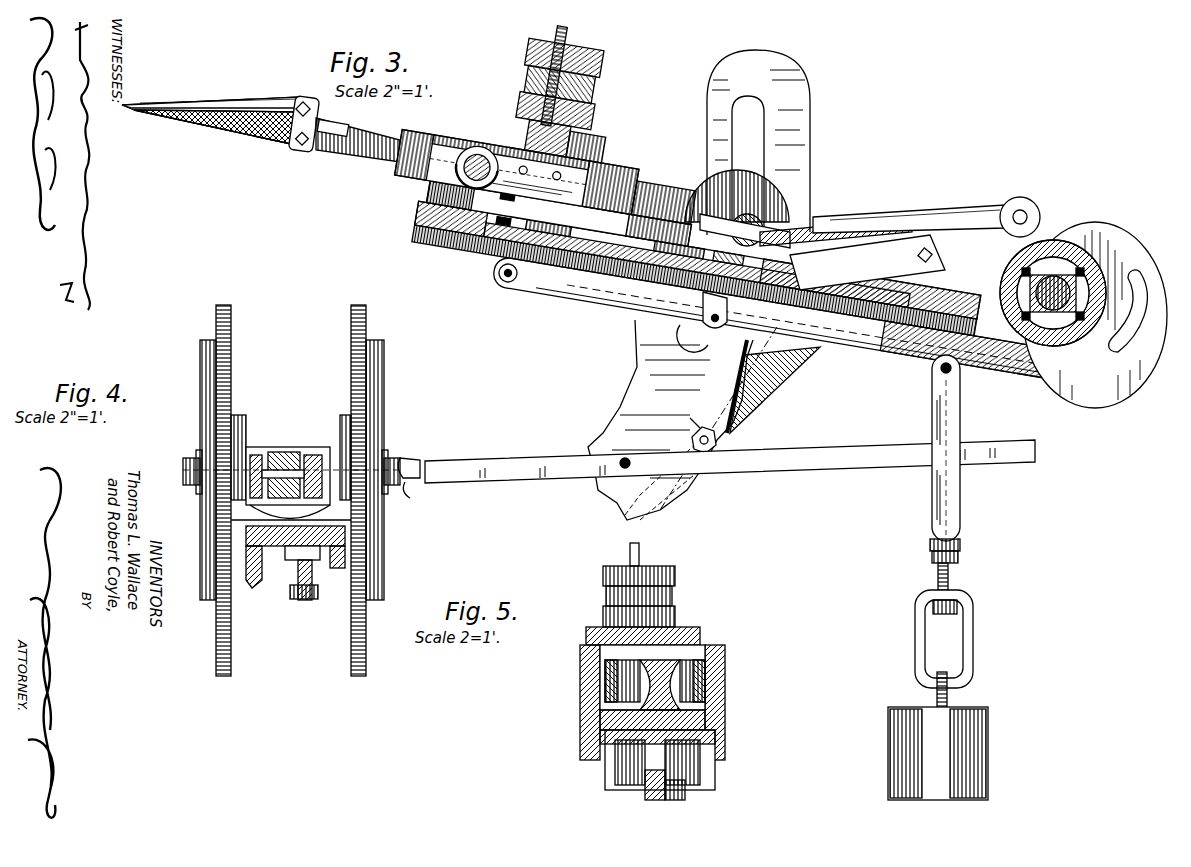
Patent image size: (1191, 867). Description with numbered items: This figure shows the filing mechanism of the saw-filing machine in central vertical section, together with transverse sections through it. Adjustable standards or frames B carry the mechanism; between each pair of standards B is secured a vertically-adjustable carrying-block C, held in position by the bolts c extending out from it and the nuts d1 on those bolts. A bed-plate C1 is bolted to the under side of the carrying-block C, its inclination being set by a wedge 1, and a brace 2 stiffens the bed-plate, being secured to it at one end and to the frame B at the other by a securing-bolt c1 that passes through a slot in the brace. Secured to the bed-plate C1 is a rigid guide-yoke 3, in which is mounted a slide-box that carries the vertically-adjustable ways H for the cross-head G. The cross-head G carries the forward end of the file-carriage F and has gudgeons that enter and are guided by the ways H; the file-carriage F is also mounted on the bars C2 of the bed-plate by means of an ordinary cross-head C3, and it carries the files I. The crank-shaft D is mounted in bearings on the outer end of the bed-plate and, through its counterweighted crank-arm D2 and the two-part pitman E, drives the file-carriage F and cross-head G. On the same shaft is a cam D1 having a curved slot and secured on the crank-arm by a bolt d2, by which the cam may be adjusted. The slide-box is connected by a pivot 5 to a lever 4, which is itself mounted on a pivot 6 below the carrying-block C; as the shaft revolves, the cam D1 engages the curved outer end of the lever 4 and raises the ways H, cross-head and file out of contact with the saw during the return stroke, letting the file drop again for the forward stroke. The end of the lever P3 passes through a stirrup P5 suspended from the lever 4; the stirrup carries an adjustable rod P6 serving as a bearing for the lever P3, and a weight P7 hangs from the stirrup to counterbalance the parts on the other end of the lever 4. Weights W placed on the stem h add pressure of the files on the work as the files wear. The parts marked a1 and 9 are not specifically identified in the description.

In FIG. 3, the files I is at (236, 128).
In FIG. 3, the adjustable ways H is at (396, 180).
In FIG. 5, the adjustable ways H is at (720, 630).
In FIG. 3, the cross-head G is at (440, 190).
In FIG. 5, the cross-head G is at (585, 645).
In FIG. 3, the file-carriage F is at (452, 142).
In FIG. 5, the file-carriage F is at (655, 672).
In FIG. 3, the guide-yoke 3 is at (505, 126).
In FIG. 5, the guide-yoke 3 is at (718, 700).
In FIG. 3, the weights W is at (596, 64).
In FIG. 5, the weights W is at (676, 572).
In FIG. 3, the stem h is at (572, 30).
In FIG. 5, the stem h is at (640, 547).
In FIG. 3, the adjustable standards B is at (706, 75).
In FIG. 4, the adjustable standards B is at (200, 413).
In FIG. 3, the carrying-block C is at (735, 190).
In FIG. 4, the carrying-block C is at (242, 437).
In FIG. 3, the bed-plate C1 is at (805, 283).
In FIG. 4, the bed-plate C1 is at (278, 585).
In FIG. 5, the bed-plate C1 is at (716, 760).
In FIG. 3, the bars C2 is at (890, 258).
In FIG. 3, the cross-head C3 is at (800, 218).
In FIG. 3, the pitman E is at (930, 222).
In FIG. 3, the crank-shaft D is at (1090, 240).
In FIG. 3, the cam D1 is at (1065, 250).
In FIG. 3, the crank-arm D2 is at (1035, 215).
In FIG. 3, the bolt d2 is at (1015, 262).
In FIG. 3, the lever 4 is at (590, 292).
In FIG. 4, the lever 4 is at (308, 595).
In FIG. 5, the lever 4 is at (686, 790).
In FIG. 3, the pivot 5 is at (500, 280).
In FIG. 5, the pivot 5 is at (645, 790).
In FIG. 3, the pivot 6 is at (706, 332).
In FIG. 4, the pivot 6 is at (290, 600).
In FIG. 3, the wedge 1 is at (778, 275).
In FIG. 4, the wedge 1 is at (240, 525).
In FIG. 3, the brace 2 is at (765, 400).
In FIG. 3, the securing-bolt c1 is at (700, 398).
In FIG. 3, the bolts c is at (410, 496).
In FIG. 4, the bolts c is at (183, 477).
In FIG. 4, the nuts d1 is at (195, 458).
In FIG. 3, the axle end a1 is at (412, 454).
In FIG. 3, the lever P3 is at (800, 462).
In FIG. 3, the stirrup P5 is at (940, 500).
In FIG. 3, the adjustable rod P6 is at (950, 570).
In FIG. 3, the weight P7 is at (990, 722).
In FIG. 5, the roller 9 is at (715, 662).